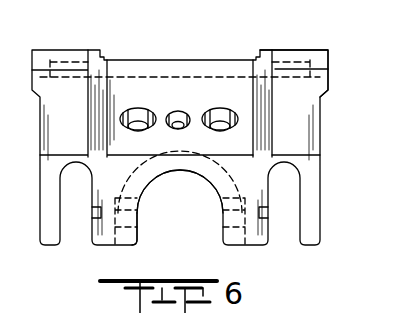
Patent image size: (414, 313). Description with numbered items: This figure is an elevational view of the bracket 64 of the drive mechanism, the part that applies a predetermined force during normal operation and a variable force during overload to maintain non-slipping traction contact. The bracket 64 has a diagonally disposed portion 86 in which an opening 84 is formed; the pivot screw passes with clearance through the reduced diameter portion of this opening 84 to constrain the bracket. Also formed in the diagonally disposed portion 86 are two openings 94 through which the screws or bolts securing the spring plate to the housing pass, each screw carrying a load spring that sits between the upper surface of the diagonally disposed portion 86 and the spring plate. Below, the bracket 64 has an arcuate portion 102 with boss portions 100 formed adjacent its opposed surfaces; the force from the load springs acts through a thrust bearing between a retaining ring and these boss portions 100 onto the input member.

The bracket 64 is at (312, 48).
The opening 84 is at (174, 122).
The diagonally disposed portion 86 is at (212, 48).
The openings 94 is at (130, 110).
The boss portions 100 is at (242, 199).
The arcuate portion 102 is at (140, 233).